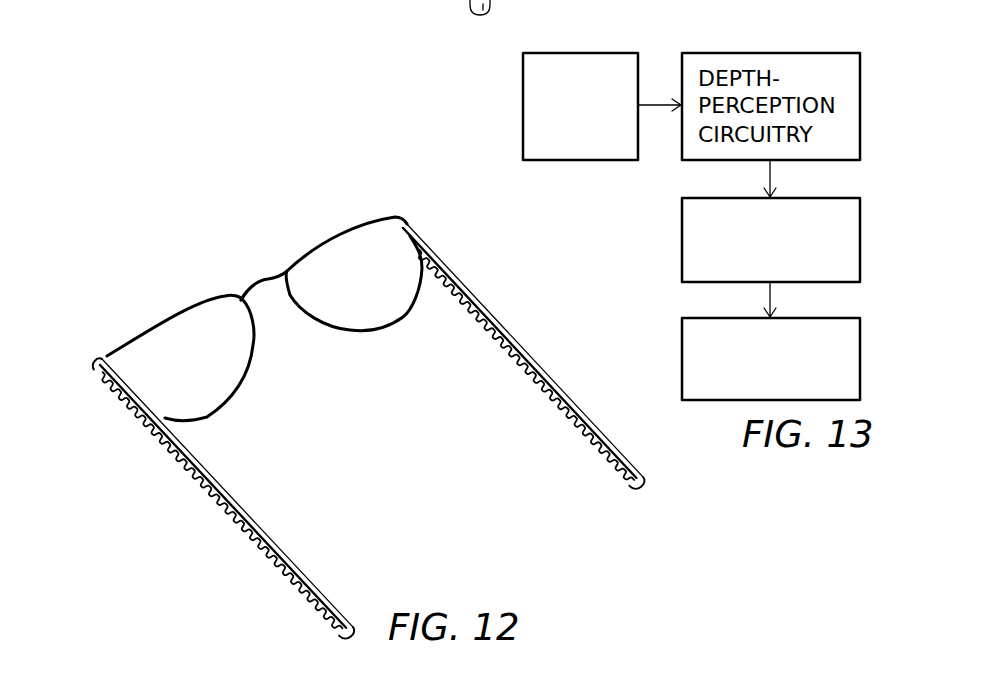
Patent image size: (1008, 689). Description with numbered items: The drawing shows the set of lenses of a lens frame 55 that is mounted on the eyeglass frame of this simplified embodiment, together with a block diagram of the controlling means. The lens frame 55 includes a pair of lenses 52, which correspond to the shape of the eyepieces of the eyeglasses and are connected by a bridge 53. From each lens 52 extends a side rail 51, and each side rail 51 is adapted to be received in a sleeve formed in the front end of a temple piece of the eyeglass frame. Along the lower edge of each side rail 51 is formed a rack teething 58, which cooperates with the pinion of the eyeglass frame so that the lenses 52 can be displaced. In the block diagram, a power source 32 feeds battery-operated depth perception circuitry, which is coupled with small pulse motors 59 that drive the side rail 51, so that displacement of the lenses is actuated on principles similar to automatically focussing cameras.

In FIG. 13, the power source 32 is at (597, 52).
In FIG. 12, the side rail 51 is at (265, 532).
In FIG. 13, the side rail 51 is at (861, 362).
In FIG. 12, the lens 52 is at (373, 330).
In FIG. 12, the bridge 53 is at (266, 283).
In FIG. 12, the lens frame 55 is at (212, 287).
In FIG. 12, the rack teething 58 is at (178, 463).
In FIG. 13, the pulse motor 59 is at (860, 233).